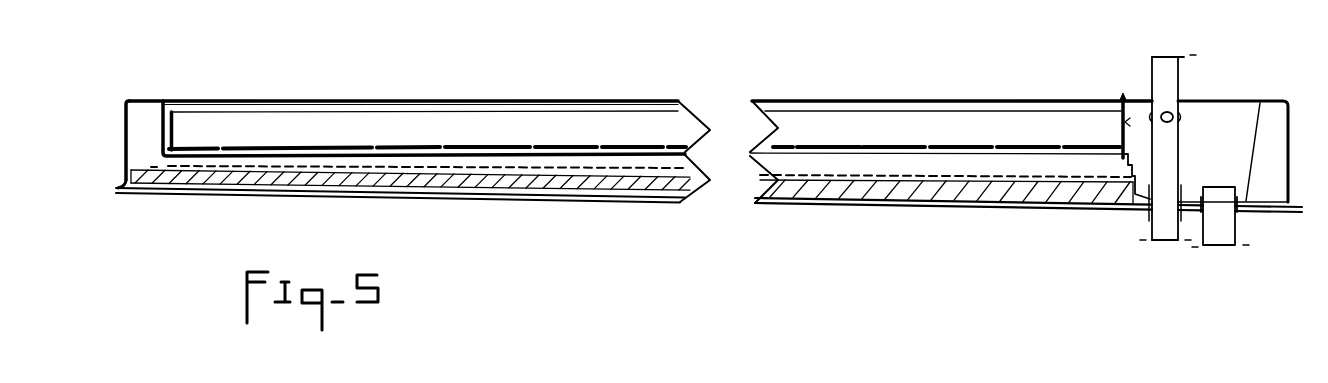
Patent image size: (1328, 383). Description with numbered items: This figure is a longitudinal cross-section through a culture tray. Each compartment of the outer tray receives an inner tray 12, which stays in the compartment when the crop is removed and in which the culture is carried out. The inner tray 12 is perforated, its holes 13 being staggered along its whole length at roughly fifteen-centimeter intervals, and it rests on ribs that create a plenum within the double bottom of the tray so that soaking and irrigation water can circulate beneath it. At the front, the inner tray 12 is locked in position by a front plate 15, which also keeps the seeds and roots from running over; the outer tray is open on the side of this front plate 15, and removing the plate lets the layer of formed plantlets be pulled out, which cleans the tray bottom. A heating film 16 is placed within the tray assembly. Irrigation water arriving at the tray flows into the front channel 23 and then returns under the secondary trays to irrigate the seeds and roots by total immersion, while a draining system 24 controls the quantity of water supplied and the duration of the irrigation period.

The inner tray 12 is at (173, 125).
The holes 13 is at (302, 146).
The front plate 15 is at (1125, 112).
The heating film 16 is at (143, 163).
The front channel 23 is at (1200, 118).
The draining system 24 is at (1163, 222).